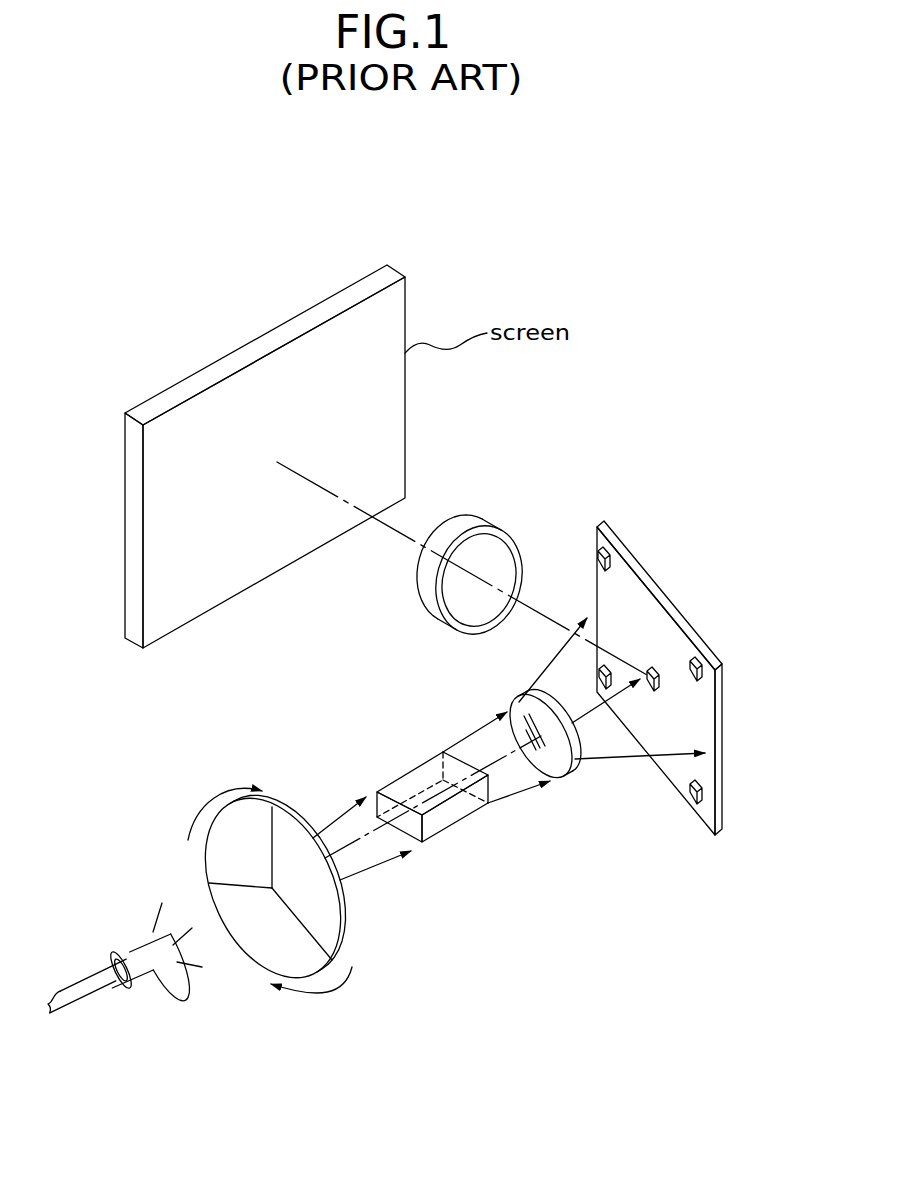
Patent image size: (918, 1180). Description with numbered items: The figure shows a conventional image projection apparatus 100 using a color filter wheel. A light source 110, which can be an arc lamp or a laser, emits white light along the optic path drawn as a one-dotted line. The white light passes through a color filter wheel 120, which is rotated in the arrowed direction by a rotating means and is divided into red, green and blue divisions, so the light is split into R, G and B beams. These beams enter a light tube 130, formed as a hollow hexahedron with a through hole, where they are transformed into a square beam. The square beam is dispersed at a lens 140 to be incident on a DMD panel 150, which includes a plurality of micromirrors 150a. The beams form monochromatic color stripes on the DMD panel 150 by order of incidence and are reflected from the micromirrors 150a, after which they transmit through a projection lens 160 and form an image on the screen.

The image projection apparatus 100 is at (216, 186).
The light source 110 is at (135, 958).
The color filter wheel 120 is at (340, 905).
The light tube 130 is at (403, 775).
The lens 140 is at (575, 762).
The DMD panel 150 is at (690, 622).
The micromirrors 150a is at (648, 668).
The projection lens 160 is at (477, 520).